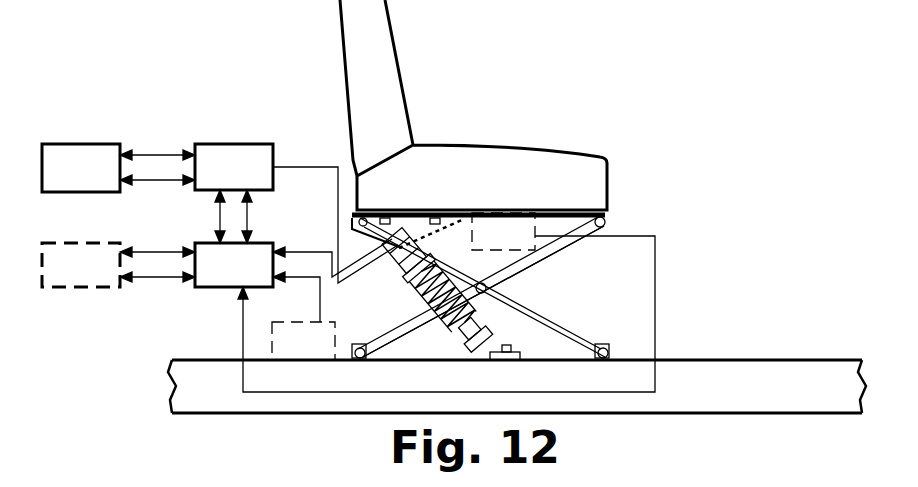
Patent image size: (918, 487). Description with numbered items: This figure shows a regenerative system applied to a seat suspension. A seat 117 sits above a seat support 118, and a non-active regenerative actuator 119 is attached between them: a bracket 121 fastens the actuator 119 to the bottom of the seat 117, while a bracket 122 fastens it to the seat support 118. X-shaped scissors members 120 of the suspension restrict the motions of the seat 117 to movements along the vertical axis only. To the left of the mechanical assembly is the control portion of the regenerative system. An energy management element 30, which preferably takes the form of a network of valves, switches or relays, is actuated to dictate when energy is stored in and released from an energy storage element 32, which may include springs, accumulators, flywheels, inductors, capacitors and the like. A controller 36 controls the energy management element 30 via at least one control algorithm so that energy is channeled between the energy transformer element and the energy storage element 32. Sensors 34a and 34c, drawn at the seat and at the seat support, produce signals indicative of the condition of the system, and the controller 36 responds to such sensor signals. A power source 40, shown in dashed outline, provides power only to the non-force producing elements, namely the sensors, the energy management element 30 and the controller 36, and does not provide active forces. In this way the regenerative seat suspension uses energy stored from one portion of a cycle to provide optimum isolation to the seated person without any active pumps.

The energy management element 30 is at (221, 183).
The energy storage element 32 is at (68, 186).
The controller 36 is at (221, 279).
The power source 40 is at (68, 279).
The sensor 34a is at (484, 246).
The sensor 34c is at (284, 355).
The seat 117 is at (462, 193).
The seat support 118 is at (710, 395).
The non-active regenerative actuator 119 is at (552, 287).
The X-shaped scissors members 120 is at (563, 318).
The bracket 121 is at (417, 213).
The bracket 122 is at (498, 361).